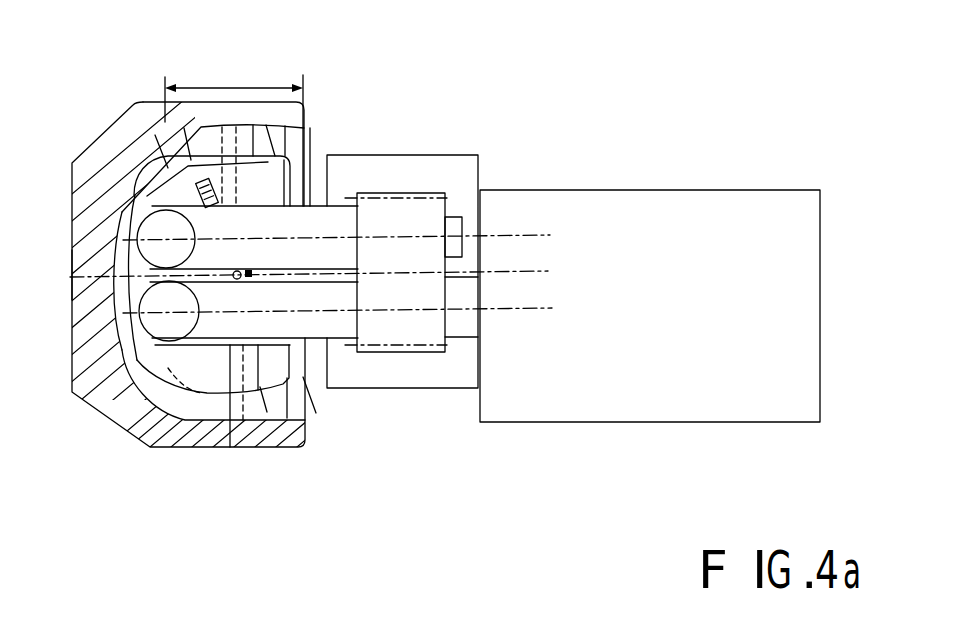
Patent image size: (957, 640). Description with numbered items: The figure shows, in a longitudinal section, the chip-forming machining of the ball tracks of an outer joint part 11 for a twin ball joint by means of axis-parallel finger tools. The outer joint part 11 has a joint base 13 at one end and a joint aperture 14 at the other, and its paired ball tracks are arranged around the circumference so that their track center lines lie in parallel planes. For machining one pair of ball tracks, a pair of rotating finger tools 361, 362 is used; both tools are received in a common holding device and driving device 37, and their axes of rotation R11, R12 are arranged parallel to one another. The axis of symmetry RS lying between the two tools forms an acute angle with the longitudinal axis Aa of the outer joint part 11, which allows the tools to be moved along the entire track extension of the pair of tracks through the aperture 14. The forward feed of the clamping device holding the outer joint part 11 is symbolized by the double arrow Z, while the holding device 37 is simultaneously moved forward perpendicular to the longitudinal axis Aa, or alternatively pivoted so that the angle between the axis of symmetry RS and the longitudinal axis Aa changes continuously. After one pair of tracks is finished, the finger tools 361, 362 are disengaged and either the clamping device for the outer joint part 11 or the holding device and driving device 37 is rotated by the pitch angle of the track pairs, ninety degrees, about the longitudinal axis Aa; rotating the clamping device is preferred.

The outer joint part 11 is at (121, 80).
The joint base 13 is at (72, 193).
The joint aperture 14 is at (244, 224).
The longitudinal axis Aa is at (74, 277).
The double arrow Z is at (234, 132).
The finger tool 361 is at (308, 190).
The finger tool 362 is at (277, 320).
The holding device and driving device 37 is at (645, 202).
The axis of rotation R11 is at (512, 236).
The axis of symmetry RS is at (546, 272).
The axis of rotation R12 is at (519, 308).